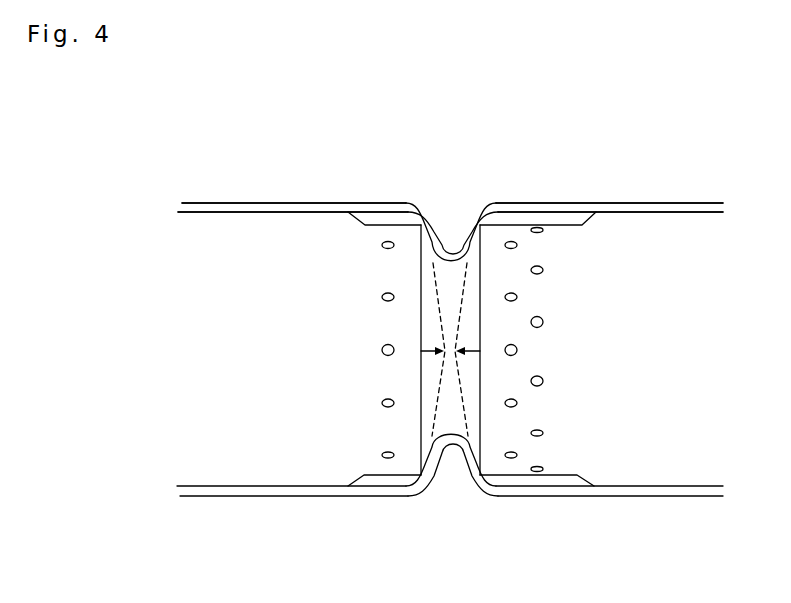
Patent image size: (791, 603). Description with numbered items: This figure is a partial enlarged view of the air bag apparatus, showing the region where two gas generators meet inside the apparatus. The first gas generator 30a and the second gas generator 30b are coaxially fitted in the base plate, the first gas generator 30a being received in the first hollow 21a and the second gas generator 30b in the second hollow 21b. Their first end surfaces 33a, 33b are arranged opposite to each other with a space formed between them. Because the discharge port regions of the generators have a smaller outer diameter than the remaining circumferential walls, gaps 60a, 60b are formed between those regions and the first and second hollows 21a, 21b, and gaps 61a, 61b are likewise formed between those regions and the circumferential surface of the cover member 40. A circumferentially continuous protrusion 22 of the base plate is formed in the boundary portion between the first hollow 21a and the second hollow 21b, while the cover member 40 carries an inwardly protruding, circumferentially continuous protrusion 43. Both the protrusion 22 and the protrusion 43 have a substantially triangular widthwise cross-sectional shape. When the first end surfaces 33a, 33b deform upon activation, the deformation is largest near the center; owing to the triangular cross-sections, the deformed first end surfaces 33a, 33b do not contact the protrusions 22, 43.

The cover member 40 is at (609, 201).
The first gas generator 30a is at (685, 238).
The second gas generator 30b is at (242, 232).
The protrusion 43 is at (443, 244).
The first end surface 33a is at (480, 278).
The first end surface 33b is at (421, 278).
The gap 61a is at (547, 223).
The gap 61b is at (375, 221).
The first hollow 21a is at (585, 493).
The second hollow 21b is at (232, 492).
The protrusion 22 is at (458, 466).
The gap 60a is at (522, 482).
The gap 60b is at (380, 482).